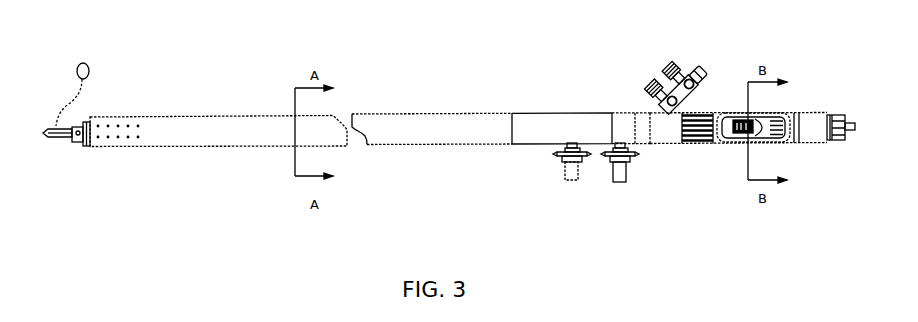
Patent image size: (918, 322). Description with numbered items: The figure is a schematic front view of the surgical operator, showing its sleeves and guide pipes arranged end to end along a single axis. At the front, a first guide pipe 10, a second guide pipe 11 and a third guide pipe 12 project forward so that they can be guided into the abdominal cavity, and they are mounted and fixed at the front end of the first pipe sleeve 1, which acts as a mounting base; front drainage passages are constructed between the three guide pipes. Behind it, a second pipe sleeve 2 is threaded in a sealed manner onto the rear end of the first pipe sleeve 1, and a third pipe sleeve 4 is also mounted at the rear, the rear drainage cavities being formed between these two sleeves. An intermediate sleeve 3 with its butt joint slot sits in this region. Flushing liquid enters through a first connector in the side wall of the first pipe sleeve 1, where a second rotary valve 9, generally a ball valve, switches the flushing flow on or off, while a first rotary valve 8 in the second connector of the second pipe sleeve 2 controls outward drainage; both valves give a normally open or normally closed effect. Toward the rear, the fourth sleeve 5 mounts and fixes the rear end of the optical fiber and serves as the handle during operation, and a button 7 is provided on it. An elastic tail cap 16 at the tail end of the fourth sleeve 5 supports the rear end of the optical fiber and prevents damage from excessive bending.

The first pipe sleeve 1 is at (518, 122).
The second pipe sleeve 2 is at (615, 138).
The intermediate sleeve 3 is at (643, 120).
The third pipe sleeve 4 is at (680, 110).
The fourth sleeve 5 is at (783, 120).
The button 7 is at (745, 138).
The first rotary valve 8 is at (618, 182).
The second rotary valve 9 is at (570, 180).
The first guide pipe 10 is at (408, 143).
The second guide pipe 11 is at (87, 147).
The third guide pipe 12 is at (77, 138).
The tail cap 16 is at (813, 132).